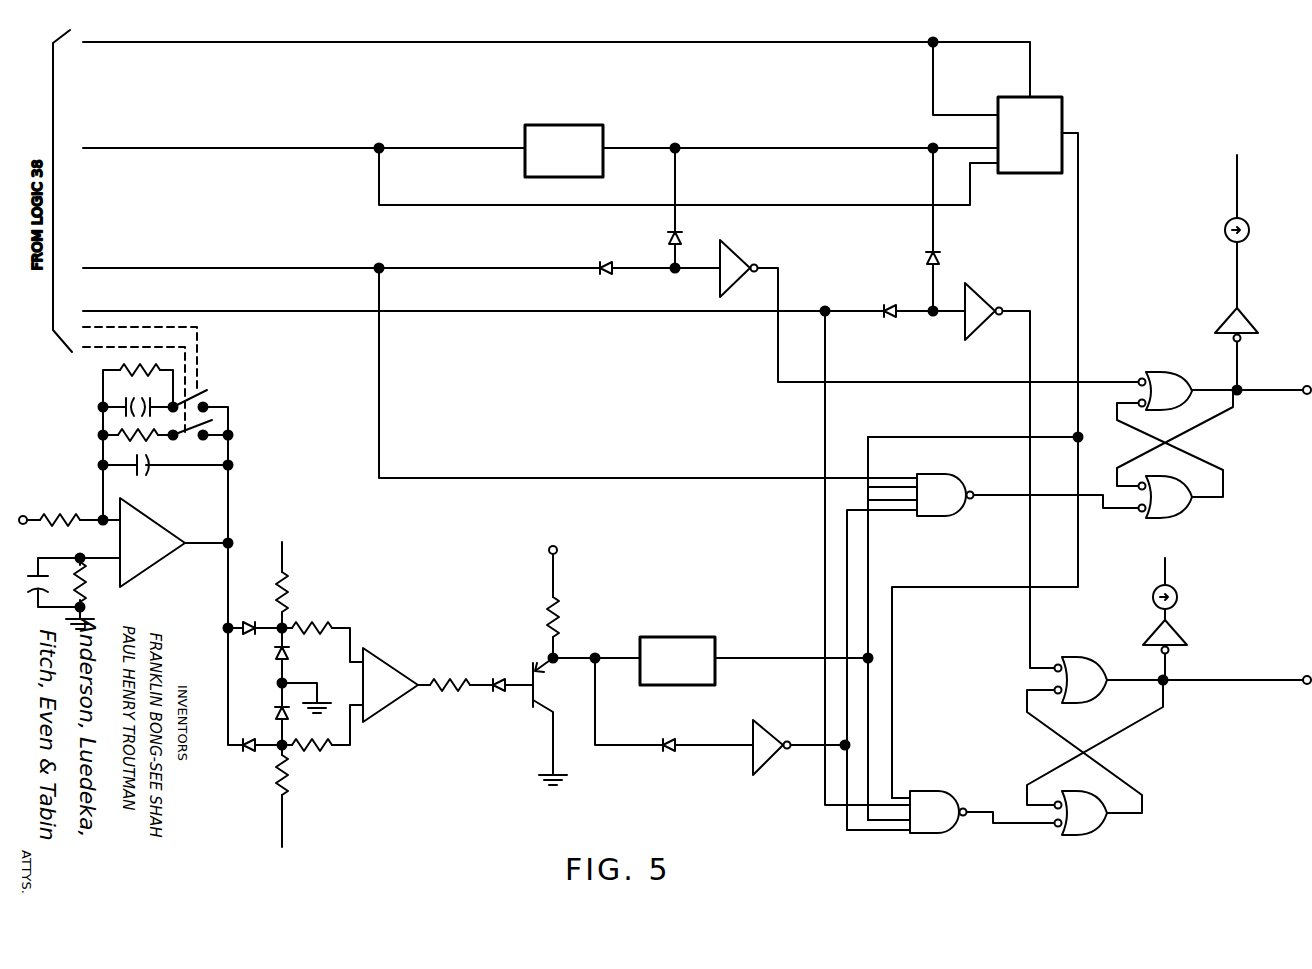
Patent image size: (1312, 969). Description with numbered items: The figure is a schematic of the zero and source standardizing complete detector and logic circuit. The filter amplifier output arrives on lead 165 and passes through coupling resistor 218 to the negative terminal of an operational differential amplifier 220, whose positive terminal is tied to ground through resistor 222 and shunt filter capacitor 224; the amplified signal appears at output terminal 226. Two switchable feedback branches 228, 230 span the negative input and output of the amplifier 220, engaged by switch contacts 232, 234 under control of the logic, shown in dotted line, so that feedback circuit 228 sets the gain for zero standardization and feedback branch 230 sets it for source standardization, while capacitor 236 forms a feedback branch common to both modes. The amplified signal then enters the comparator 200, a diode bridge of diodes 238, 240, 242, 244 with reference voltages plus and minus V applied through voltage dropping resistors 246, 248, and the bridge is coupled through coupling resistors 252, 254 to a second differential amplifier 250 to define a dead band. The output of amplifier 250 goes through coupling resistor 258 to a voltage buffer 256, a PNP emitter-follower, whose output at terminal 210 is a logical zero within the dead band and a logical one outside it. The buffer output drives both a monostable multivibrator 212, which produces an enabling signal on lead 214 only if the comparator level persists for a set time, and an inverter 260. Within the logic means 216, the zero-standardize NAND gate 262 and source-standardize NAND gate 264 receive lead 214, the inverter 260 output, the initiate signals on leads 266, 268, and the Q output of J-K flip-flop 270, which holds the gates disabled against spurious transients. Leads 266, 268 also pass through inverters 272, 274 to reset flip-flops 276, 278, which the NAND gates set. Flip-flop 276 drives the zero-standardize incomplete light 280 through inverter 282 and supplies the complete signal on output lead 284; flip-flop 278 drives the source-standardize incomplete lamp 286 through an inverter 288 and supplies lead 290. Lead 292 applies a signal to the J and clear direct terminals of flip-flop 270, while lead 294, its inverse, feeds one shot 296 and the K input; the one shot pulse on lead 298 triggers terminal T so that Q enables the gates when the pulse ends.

The lead 165 is at (44, 502).
The comparator 200 is at (358, 554).
The terminal 210 is at (450, 680).
The monostable multivibrator 212 is at (682, 637).
The output terminal 214 is at (754, 655).
The logic means 216 is at (777, 554).
The coupling resistor 218 is at (74, 522).
The operational differential amplifier 220 is at (160, 520).
The resistor 222 is at (92, 598).
The shunt filter capacitor 224 is at (34, 584).
The output terminal 226 is at (200, 540).
The feedback branch 228 is at (114, 450).
The feedback branch 230 is at (106, 400).
The switch contacts 232 is at (172, 425).
The switch contacts 234 is at (199, 392).
The capacitor 236 is at (152, 462).
The diode 238 is at (251, 623).
The diode 240 is at (247, 738).
The diode 242 is at (292, 653).
The diode 244 is at (290, 717).
The voltage dropping resistor 246 is at (290, 788).
The voltage dropping resistor 248 is at (290, 602).
The differential amplifier 250 is at (388, 668).
The coupling resistor 252 is at (320, 624).
The coupling resistor 254 is at (335, 750).
The voltage buffer 256 is at (601, 585).
The coupling resistor 258 is at (455, 692).
The inverter 260 is at (766, 726).
The zero-standardize NAND gate 262 is at (938, 797).
The source-standardize NAND gate 264 is at (944, 508).
The lead 266 is at (226, 310).
The lead 268 is at (226, 266).
The J-K flip-flop circuit 270 is at (1064, 105).
The inverter 272 is at (980, 297).
The inverter 274 is at (740, 250).
The flip-flop 276 is at (1090, 746).
The flip-flop 278 is at (1168, 445).
The zero-standardize incomplete light 280 is at (1177, 595).
The inverter 282 is at (1178, 640).
The output lead 284 is at (1237, 679).
The source-standardize incomplete lamp 286 is at (1249, 229).
The driver 288 is at (1248, 326).
The lead 290 is at (1272, 388).
The lead 292 is at (232, 52).
The lead 294 is at (226, 147).
The one shot 296 is at (564, 124).
The lead 298 is at (660, 146).